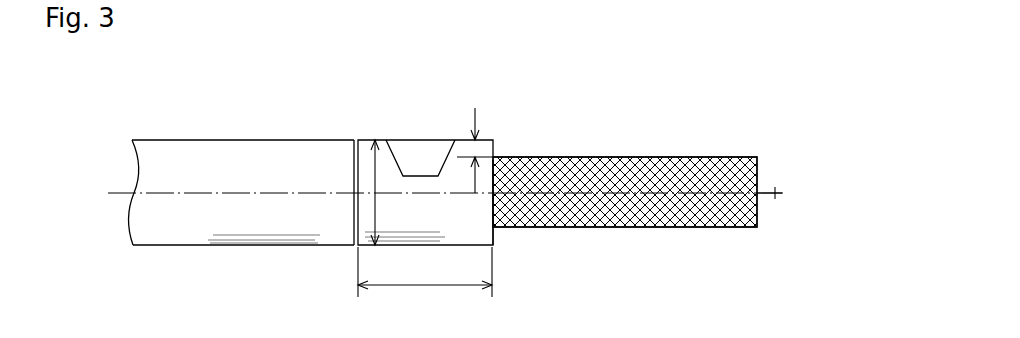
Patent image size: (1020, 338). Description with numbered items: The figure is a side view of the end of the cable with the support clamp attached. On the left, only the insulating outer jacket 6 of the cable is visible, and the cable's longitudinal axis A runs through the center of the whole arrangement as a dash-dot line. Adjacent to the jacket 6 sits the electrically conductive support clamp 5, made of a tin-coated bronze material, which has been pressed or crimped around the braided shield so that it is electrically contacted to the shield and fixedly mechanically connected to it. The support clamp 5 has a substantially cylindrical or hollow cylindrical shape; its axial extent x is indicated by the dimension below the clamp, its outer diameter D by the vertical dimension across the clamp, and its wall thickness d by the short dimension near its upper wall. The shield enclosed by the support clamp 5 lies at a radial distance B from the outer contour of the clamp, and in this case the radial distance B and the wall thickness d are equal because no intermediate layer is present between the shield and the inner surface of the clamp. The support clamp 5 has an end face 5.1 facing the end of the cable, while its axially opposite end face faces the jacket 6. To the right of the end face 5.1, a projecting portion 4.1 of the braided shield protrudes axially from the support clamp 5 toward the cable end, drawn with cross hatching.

The outer jacket 6 is at (277, 152).
The support clamp 5 is at (366, 146).
The end face 5.1 is at (494, 235).
The projecting portion 4.1 is at (697, 157).
The longitudinal axis A is at (774, 187).
The outer diameter D is at (392, 192).
The radial distance B is at (489, 124).
The wall thickness d is at (489, 153).
The axial extent x is at (425, 272).